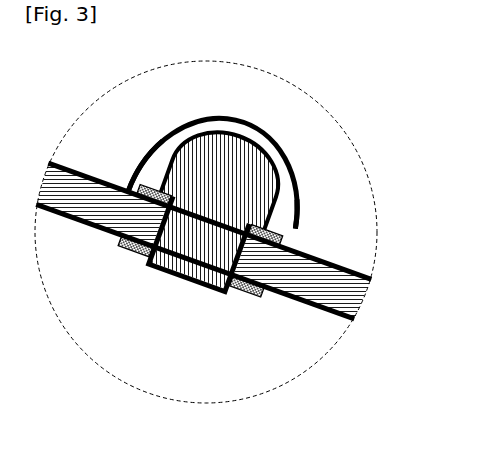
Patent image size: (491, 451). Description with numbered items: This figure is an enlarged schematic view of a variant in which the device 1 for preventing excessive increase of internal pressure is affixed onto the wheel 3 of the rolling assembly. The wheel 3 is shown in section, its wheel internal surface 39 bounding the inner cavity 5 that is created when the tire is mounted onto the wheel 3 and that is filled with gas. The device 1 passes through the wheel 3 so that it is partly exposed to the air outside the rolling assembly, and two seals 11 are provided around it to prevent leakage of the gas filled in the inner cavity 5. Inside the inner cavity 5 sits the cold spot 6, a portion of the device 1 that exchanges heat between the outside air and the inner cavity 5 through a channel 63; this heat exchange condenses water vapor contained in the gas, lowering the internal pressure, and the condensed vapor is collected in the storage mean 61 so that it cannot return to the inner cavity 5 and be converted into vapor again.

The device 1 is at (286, 110).
The wheel 3 is at (330, 303).
The wheel internal surface 39 is at (345, 275).
The inner cavity 5 is at (224, 108).
The cold spot 6 is at (187, 167).
The storage mean 61 is at (148, 160).
The channel 63 is at (287, 246).
The seals 11 is at (133, 190).